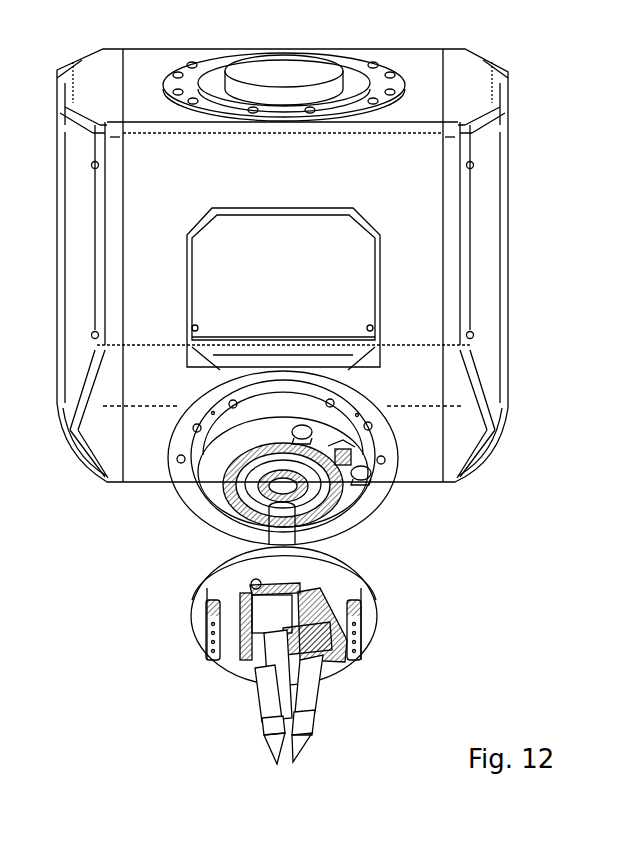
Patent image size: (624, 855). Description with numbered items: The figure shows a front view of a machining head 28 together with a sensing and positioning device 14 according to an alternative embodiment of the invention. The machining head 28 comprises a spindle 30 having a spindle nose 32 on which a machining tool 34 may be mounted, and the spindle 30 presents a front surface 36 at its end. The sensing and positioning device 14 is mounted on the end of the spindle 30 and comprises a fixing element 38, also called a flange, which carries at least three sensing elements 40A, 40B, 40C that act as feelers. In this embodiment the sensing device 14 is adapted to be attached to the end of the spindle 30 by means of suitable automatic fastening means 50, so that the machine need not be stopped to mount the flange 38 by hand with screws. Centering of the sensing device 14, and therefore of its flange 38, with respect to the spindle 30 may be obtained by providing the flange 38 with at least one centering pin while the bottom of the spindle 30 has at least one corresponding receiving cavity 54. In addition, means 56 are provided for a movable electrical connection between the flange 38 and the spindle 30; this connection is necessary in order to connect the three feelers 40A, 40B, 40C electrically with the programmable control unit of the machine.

The machining head 28 is at (532, 140).
The front surface 36 is at (213, 508).
The machining tool 34 is at (338, 527).
The spindle 30 is at (360, 513).
The spindle nose 32 is at (260, 486).
The automatic fastening means 50 is at (377, 485).
The receiving cavity 54 is at (313, 427).
The means for movable electrical connection 56 is at (353, 455).
The fixing element 38 is at (205, 583).
The sensing and positioning device 14 is at (370, 688).
The sensing element 40A is at (277, 677).
The sensing element 40B is at (258, 708).
The sensing element 40C is at (316, 706).